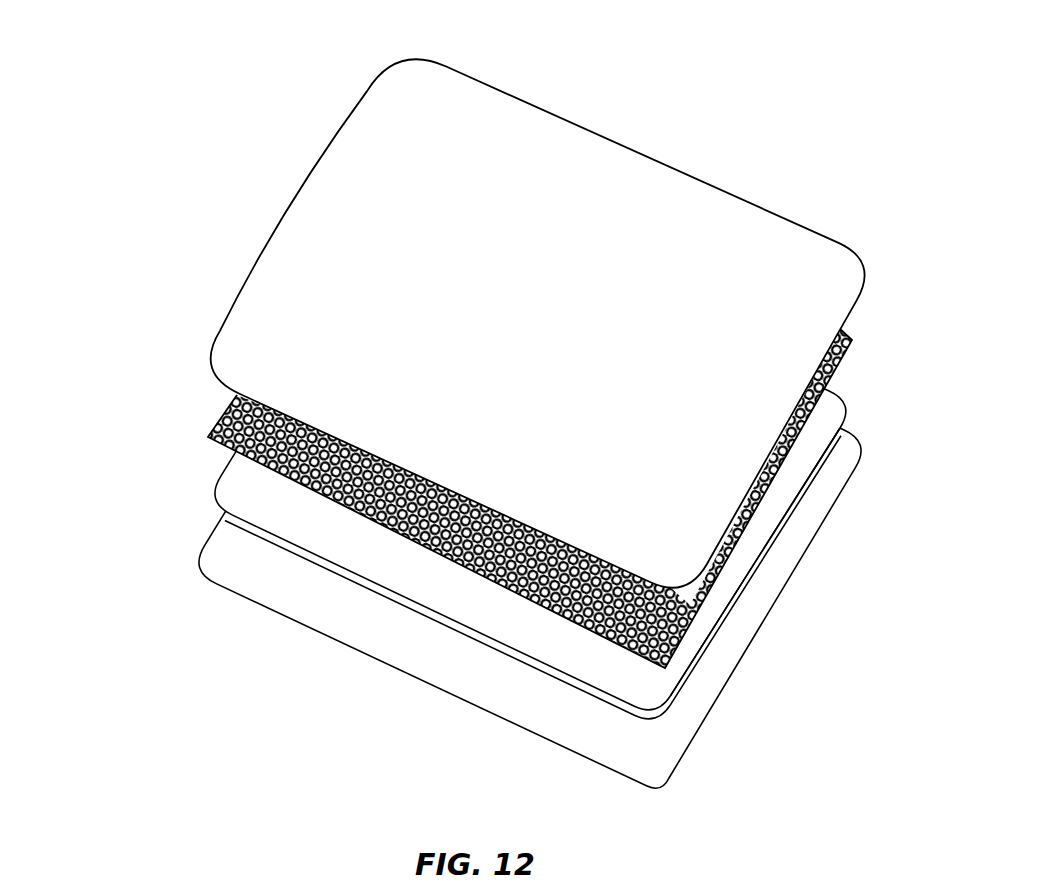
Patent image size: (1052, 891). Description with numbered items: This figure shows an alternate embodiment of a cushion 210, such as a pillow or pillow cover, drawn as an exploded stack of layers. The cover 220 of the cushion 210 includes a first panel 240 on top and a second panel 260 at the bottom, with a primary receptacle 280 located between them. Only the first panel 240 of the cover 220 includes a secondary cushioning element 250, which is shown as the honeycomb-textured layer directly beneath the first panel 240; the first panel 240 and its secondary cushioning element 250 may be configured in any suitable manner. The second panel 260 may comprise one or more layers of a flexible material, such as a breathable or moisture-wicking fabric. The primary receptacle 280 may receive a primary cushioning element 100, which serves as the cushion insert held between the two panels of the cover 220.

The cushion 210 is at (471, 410).
The cover 220 is at (471, 423).
The first panel 240 is at (77, 592).
The secondary cushioning element 250 is at (843, 368).
The primary receptacle 280 is at (208, 467).
The second panel 260 is at (183, 562).
The primary cushioning element 100 is at (747, 557).